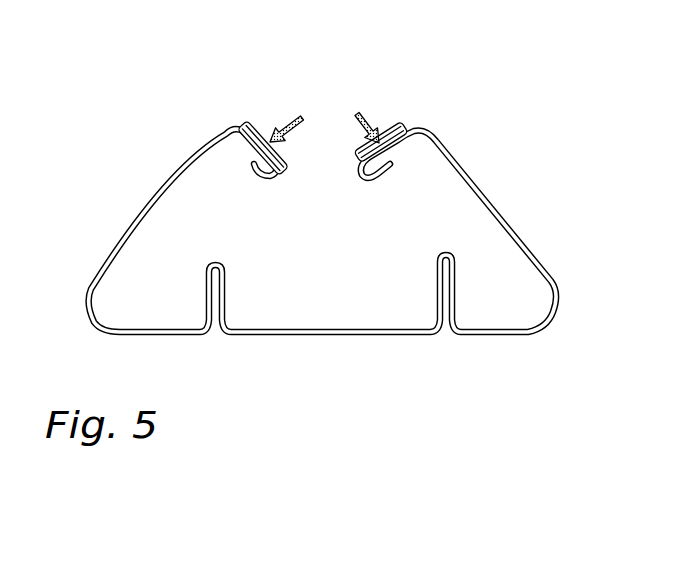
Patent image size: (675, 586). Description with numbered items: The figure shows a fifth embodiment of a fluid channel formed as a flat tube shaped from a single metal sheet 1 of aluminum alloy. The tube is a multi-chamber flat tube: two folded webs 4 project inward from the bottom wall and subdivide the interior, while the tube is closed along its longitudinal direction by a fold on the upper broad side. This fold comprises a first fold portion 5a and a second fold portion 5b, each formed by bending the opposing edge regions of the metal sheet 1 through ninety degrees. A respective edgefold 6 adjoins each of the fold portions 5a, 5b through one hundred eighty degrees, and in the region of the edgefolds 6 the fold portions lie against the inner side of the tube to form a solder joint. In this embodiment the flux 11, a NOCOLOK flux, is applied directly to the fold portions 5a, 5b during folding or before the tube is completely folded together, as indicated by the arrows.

The metal sheet 1 is at (133, 223).
The folded web 4 is at (221, 300).
The first fold portion 5a is at (246, 163).
The second fold portion 5b is at (398, 148).
The edgefold 6 is at (261, 174).
The flux 11 is at (252, 138).